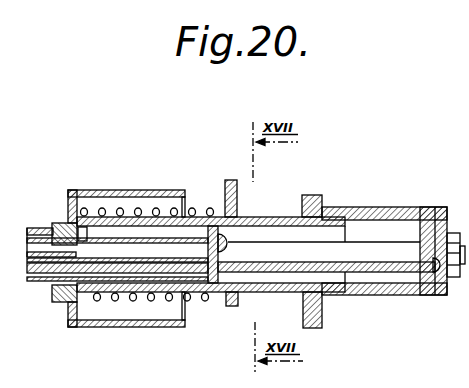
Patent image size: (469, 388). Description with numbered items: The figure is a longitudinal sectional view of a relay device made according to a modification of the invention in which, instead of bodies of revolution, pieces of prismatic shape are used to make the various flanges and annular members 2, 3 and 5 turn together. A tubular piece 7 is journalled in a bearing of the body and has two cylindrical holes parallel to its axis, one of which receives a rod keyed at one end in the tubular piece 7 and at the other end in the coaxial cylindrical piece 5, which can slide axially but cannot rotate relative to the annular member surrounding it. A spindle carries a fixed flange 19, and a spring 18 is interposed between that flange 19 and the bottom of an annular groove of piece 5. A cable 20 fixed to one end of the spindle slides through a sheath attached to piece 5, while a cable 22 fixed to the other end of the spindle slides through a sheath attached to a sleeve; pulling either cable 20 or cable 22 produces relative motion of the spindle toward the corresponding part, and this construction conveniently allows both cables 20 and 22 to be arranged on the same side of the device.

The annular member 2 is at (305, 195).
The annular member 3 is at (320, 197).
The cylindrical piece 5 is at (137, 190).
The tubular piece 7 is at (417, 295).
The spring 18 is at (214, 306).
The flange 19 is at (233, 180).
The cable 20 is at (89, 240).
The cable 22 is at (381, 272).